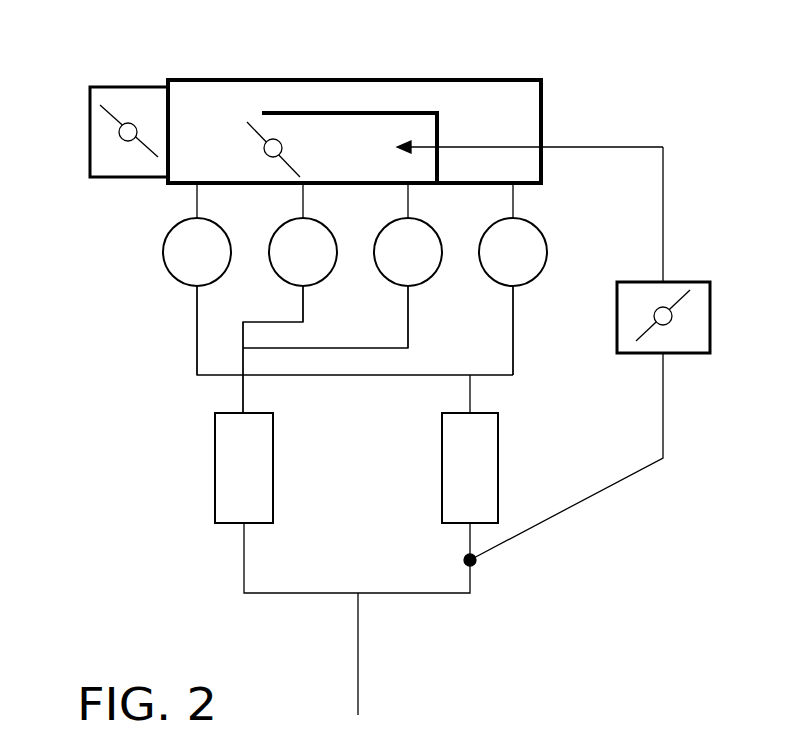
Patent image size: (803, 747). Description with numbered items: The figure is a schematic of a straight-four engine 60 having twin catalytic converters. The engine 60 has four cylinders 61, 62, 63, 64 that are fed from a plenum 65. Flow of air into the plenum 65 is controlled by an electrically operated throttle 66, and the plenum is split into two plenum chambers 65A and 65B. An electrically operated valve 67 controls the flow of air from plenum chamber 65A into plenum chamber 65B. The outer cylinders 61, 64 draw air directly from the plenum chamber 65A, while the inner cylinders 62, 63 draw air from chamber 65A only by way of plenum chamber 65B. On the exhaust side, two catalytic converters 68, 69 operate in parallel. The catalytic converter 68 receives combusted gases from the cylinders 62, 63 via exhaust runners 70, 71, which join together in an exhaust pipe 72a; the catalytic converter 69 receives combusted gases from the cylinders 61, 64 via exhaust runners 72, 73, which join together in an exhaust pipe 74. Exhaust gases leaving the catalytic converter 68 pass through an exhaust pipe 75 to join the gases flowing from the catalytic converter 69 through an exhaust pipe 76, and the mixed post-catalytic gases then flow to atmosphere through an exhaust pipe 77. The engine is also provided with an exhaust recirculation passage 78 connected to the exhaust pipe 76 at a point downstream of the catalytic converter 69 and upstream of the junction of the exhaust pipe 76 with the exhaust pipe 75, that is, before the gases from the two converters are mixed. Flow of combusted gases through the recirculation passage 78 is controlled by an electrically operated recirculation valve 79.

The engine 60 is at (586, 72).
The cylinder 61 is at (197, 279).
The cylinder 62 is at (303, 252).
The cylinder 63 is at (408, 265).
The cylinder 64 is at (513, 279).
The plenum 65 is at (542, 112).
The plenum chamber 65A is at (530, 127).
The plenum chamber 65B is at (349, 148).
The electrically operated throttle 66 is at (120, 131).
The electrically operated valve 67 is at (265, 150).
The catalytic converter 68 is at (244, 468).
The catalytic converter 69 is at (470, 468).
The exhaust runner 70 is at (303, 302).
The exhaust runner 71 is at (409, 312).
The exhaust runner 72 is at (197, 322).
The exhaust pipe 72a is at (243, 395).
The exhaust runner 73 is at (515, 325).
The exhaust pipe 74 is at (470, 394).
The exhaust pipe 75 is at (242, 558).
The exhaust pipe 76 is at (470, 575).
The exhaust pipe 77 is at (358, 645).
The exhaust recirculation passage 78 is at (570, 508).
The electrically operated recirculation valve 79 is at (710, 282).